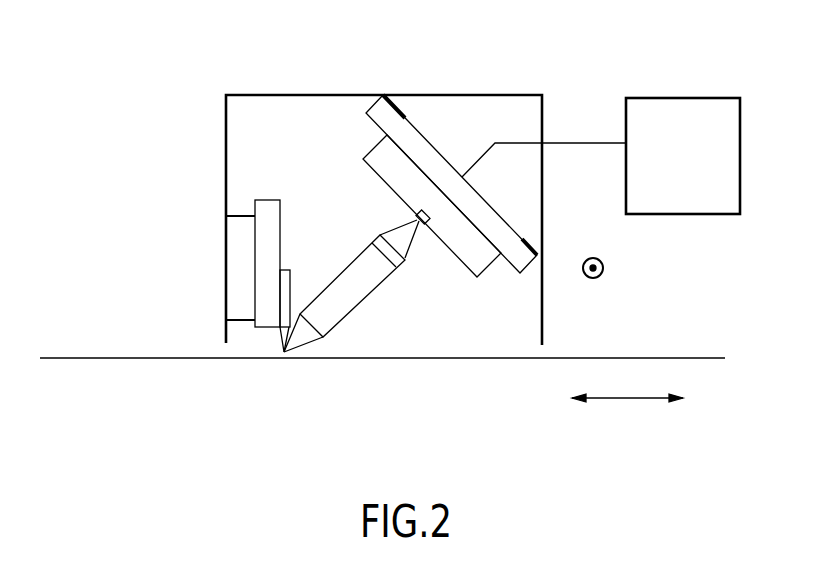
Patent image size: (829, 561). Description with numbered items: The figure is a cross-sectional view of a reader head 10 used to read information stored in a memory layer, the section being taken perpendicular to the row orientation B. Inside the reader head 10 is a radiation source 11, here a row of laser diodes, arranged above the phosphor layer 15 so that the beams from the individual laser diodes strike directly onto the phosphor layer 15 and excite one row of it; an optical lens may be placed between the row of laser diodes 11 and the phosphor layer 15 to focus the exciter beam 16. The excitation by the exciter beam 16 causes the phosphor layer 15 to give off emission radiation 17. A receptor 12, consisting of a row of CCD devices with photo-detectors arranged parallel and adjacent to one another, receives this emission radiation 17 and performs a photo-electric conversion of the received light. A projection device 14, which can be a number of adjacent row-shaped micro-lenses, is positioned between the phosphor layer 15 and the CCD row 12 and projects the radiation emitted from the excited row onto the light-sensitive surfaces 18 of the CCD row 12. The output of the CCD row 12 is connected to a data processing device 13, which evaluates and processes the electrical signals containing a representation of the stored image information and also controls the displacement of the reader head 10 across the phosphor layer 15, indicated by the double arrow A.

The reader head 10 is at (270, 107).
The radiation source 11 is at (285, 266).
The receptor 12 is at (486, 272).
The data processing device 13 is at (673, 103).
The projection device 14 is at (370, 303).
The phosphor layer 15 is at (641, 358).
The exciter beam 16 is at (284, 352).
The emission radiation 17 is at (305, 340).
The light-sensitive surfaces 18 is at (416, 216).
The direction of movement A is at (628, 402).
The row orientation B is at (604, 268).